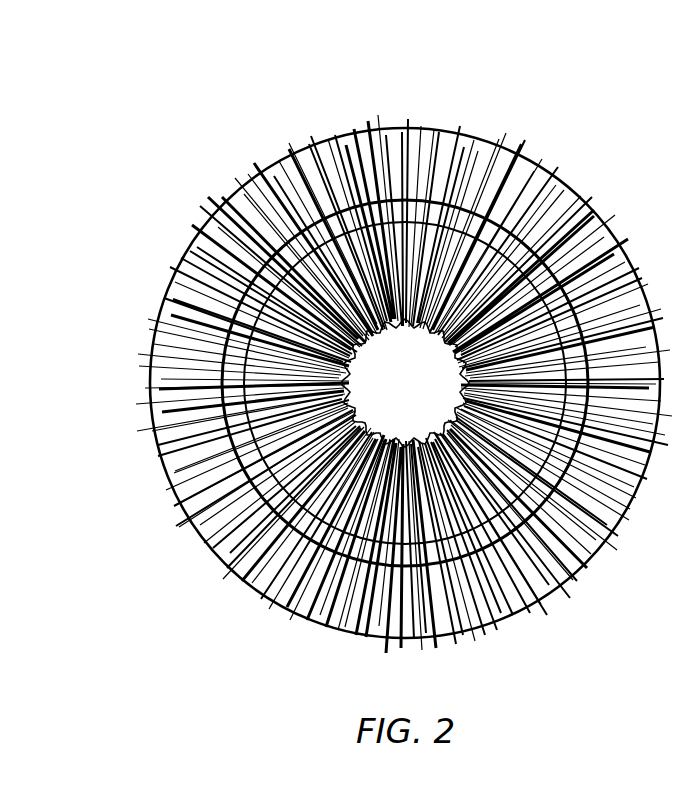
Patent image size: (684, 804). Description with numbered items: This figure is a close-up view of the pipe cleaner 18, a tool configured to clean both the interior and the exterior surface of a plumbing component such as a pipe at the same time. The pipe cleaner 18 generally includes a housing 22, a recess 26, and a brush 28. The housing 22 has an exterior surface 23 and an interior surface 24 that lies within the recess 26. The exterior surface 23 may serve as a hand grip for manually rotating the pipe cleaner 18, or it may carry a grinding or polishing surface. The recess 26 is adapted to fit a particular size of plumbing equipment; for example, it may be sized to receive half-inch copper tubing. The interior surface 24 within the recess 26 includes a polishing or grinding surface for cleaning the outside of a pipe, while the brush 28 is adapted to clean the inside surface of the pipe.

The pipe cleaner 18 is at (370, 352).
The housing 22 is at (303, 187).
The exterior surface 23 is at (163, 263).
The interior surface 24 is at (262, 383).
The recess 26 is at (200, 467).
The brush 28 is at (307, 424).